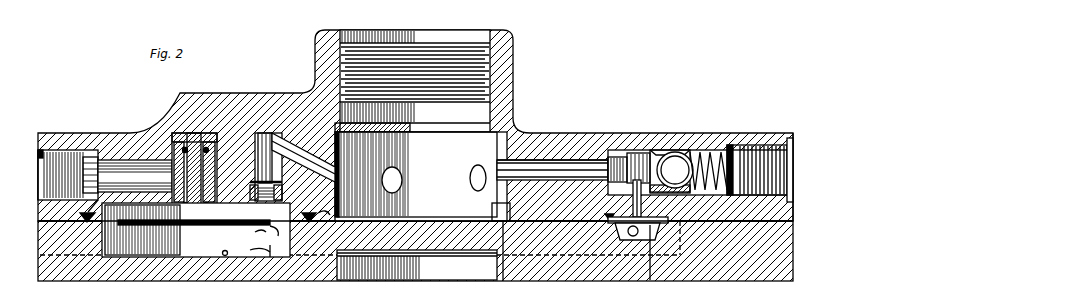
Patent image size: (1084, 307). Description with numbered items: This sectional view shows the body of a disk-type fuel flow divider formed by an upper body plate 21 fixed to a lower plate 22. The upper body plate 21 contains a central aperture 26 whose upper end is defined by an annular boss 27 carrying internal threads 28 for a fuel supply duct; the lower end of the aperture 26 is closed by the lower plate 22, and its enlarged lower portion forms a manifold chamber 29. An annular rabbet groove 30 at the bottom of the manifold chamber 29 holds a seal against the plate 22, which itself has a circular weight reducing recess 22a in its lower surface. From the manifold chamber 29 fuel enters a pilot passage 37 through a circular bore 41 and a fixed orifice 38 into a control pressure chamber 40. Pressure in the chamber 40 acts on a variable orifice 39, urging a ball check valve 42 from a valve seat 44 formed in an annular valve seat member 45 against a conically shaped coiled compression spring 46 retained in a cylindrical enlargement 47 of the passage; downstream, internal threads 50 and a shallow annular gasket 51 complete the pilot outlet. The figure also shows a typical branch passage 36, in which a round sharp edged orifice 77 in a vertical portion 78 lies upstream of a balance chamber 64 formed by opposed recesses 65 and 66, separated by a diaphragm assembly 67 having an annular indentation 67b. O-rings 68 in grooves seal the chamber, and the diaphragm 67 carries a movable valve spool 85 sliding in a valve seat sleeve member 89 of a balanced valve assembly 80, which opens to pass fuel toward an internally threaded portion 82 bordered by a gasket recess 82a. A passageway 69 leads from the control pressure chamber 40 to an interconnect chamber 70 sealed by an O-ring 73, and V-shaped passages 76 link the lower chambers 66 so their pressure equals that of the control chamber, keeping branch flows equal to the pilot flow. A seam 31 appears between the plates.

The upper body plate 21 is at (545, 132).
The lower plate 22 is at (522, 283).
The weight reducing recess 22a is at (466, 268).
The central aperture 26 is at (480, 38).
The annular boss 27 is at (503, 70).
The internal threads 28 is at (352, 42).
The manifold chamber 29 is at (473, 147).
The annular rabbet groove 30 is at (477, 218).
The seam 31 is at (503, 262).
The branch passages 36 is at (135, 178).
The pilot passage 37 is at (566, 160).
The fixed orifice 38 is at (614, 157).
The variable orifice 39 is at (666, 150).
The control pressure chamber 40 is at (638, 160).
The circular bore 41 is at (579, 170).
The ball check valve 42 is at (712, 160).
The valve seat 44 is at (680, 160).
The annular valve seat member 45 is at (660, 152).
The conically shaped coiled compression spring 46 is at (752, 148).
The cylindrical enlargement 47 is at (730, 148).
The internal threads 50 is at (785, 140).
The shallow annular gasket 51 is at (790, 196).
The balance chamber 64 is at (270, 258).
The upper recess 65 is at (283, 228).
The lower recess 66 is at (263, 252).
The diaphragm assembly 67 is at (244, 224).
The annular indentation 67b is at (262, 235).
The O-rings 68 is at (87, 224).
The passageway 69 is at (84, 216).
The interconnect chamber 70 is at (652, 260).
The O-ring 73 is at (612, 225).
The passages 76 is at (224, 256).
The sharp edged orifice 77 is at (270, 222).
The vertical portion 78 is at (268, 133).
The balanced valve assembly 80 is at (186, 136).
The internally threaded portion 82 is at (62, 150).
The annular gasket recess 82a is at (36, 205).
The movable valve spool 85 is at (200, 150).
The valve seat sleeve member 89 is at (183, 206).